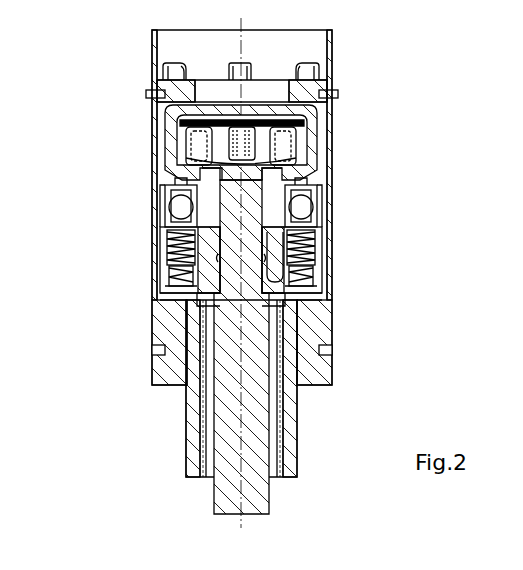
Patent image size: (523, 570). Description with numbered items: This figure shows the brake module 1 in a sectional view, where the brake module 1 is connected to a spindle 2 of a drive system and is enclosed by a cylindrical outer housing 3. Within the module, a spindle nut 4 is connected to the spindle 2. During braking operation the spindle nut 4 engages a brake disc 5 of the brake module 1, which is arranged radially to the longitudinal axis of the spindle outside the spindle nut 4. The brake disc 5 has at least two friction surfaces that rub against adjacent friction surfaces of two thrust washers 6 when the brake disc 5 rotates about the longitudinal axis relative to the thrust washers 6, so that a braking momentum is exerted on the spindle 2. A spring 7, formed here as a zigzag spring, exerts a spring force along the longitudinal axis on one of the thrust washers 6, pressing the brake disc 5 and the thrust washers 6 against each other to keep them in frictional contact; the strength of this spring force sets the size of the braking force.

The brake module 1 is at (118, 151).
The spindle 2 is at (224, 488).
The cylindrical outer housing 3 is at (313, 156).
The spindle nut 4 is at (206, 273).
The brake disc 5 is at (307, 292).
The thrust washers 6 is at (205, 288).
The spring 7 is at (312, 250).